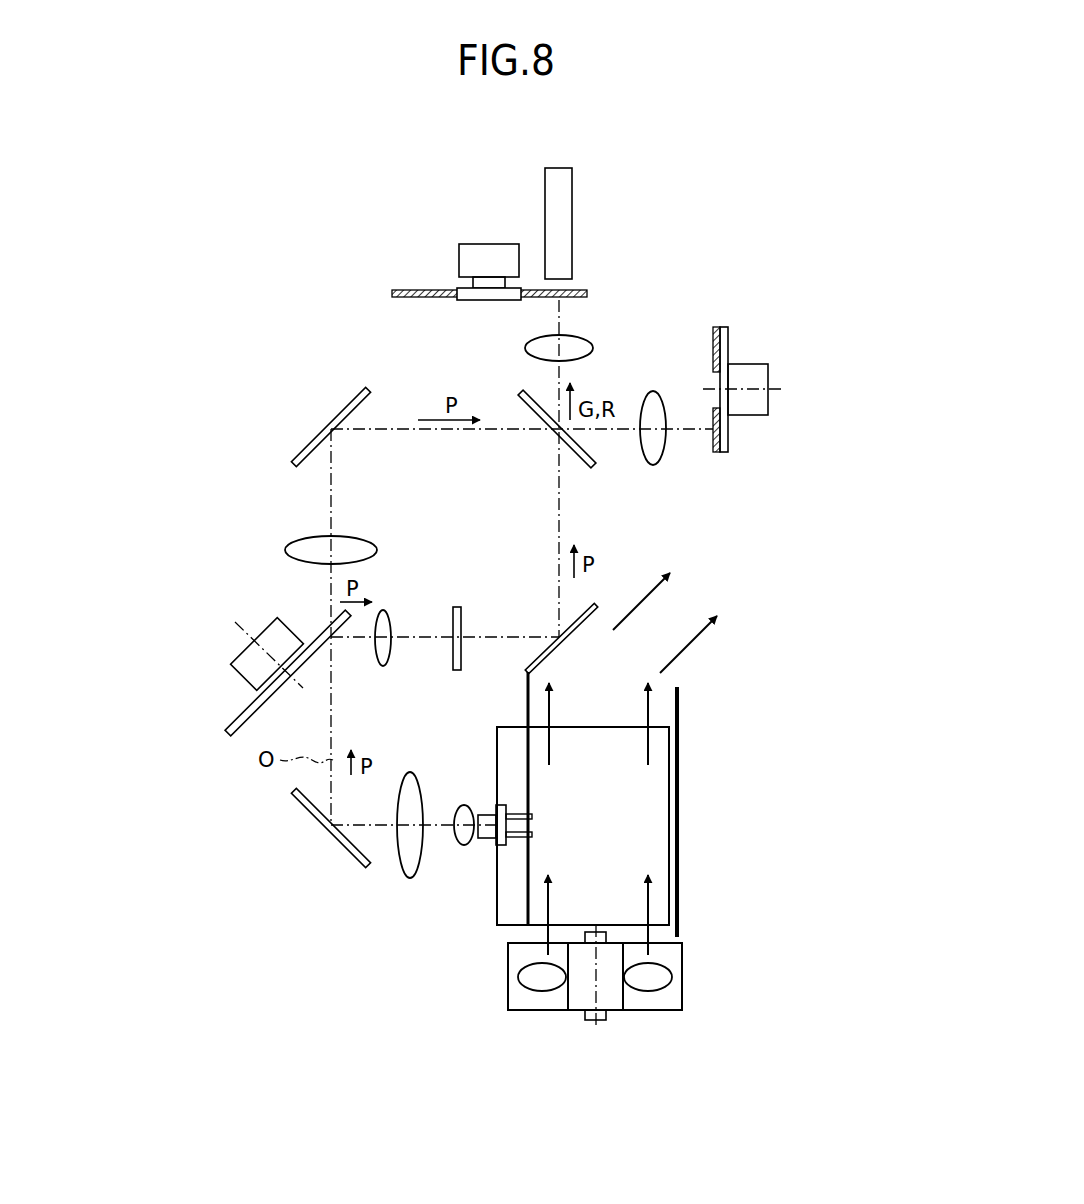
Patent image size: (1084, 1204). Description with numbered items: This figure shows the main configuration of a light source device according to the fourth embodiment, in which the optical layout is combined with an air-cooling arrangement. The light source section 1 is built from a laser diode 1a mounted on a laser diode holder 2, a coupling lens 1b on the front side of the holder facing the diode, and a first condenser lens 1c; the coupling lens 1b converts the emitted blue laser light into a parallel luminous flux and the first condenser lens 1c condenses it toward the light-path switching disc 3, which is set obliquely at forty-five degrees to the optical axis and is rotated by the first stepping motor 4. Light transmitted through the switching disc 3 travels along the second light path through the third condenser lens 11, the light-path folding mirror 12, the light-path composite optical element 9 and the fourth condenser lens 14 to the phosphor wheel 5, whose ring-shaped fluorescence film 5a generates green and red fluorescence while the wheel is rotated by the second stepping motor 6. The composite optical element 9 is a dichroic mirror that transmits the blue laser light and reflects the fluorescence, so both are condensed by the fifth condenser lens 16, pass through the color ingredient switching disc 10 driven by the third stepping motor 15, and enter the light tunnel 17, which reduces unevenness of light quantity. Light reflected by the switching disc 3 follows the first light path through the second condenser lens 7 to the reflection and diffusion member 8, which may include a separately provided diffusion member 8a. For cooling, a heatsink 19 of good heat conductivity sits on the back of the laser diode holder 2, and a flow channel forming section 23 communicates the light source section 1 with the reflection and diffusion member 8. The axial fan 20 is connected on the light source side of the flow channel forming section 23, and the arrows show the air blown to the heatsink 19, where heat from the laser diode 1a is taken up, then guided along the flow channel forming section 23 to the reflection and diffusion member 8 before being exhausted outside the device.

The light source device 1 is at (428, 911).
The laser diode 1a is at (490, 842).
The coupling lens 1b is at (464, 847).
The first condenser lens 1c is at (410, 880).
The laser diode holder 2 is at (505, 893).
The light-path switching disc 3 is at (240, 719).
The first stepping motor 4 is at (246, 652).
The phosphor wheel 5 is at (704, 427).
The fluorescence film 5a is at (713, 445).
The second stepping motor 6 is at (768, 375).
The second condenser lens 7 is at (383, 668).
The reflection and diffusion member 8 is at (594, 603).
The diffusion member 8a is at (455, 605).
The light-path composite optical element 9 is at (586, 468).
The color ingredient switching disc 10 is at (435, 288).
The third condenser lens 11 is at (300, 540).
The light-path folding mirror 12 is at (303, 450).
The fourth condenser lens 14 is at (653, 392).
The third stepping motor 15 is at (494, 244).
The fifth condenser lens 16 is at (525, 348).
The light tunnel 17 is at (575, 206).
The heatsink 19 is at (540, 897).
The axial fan 20 is at (682, 975).
The flow channel forming section 23 is at (680, 716).